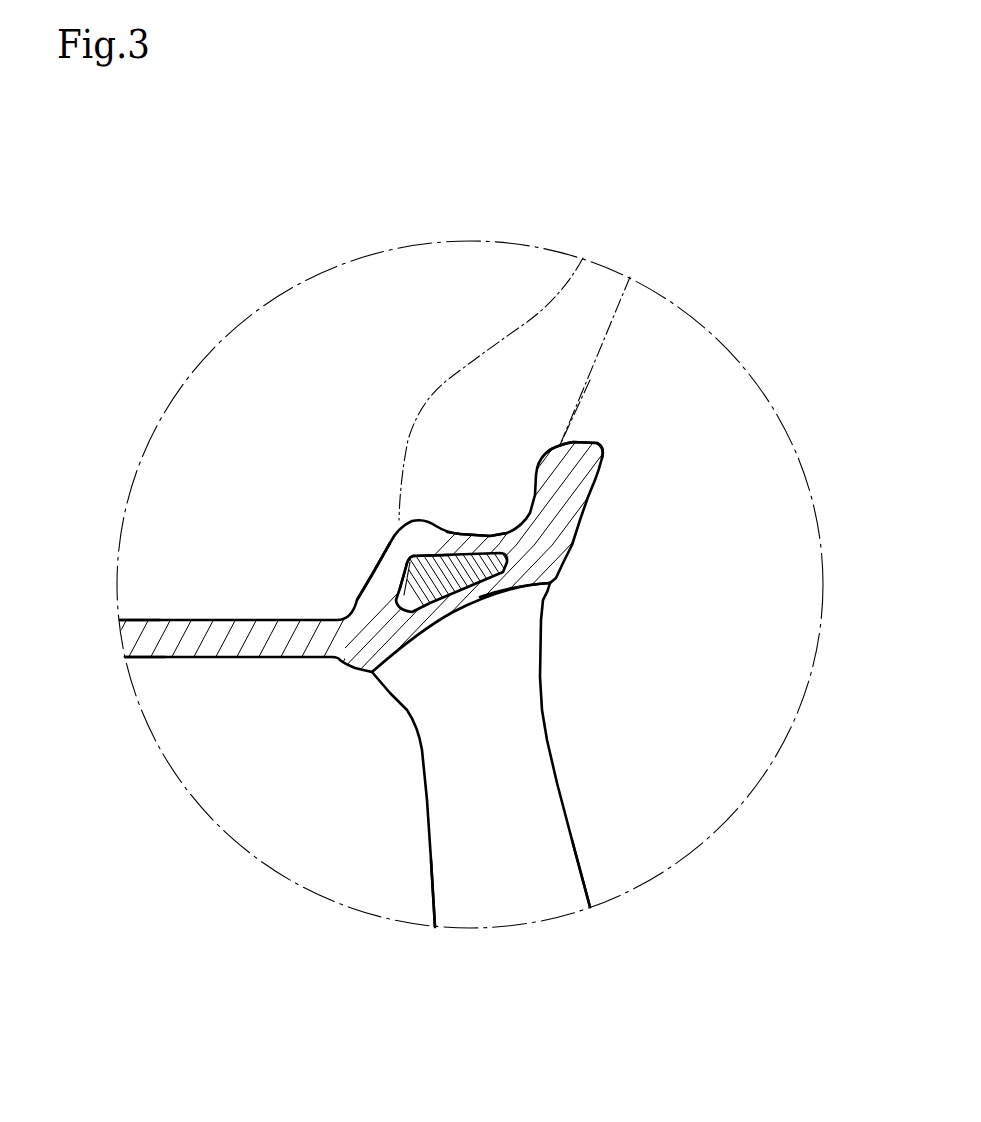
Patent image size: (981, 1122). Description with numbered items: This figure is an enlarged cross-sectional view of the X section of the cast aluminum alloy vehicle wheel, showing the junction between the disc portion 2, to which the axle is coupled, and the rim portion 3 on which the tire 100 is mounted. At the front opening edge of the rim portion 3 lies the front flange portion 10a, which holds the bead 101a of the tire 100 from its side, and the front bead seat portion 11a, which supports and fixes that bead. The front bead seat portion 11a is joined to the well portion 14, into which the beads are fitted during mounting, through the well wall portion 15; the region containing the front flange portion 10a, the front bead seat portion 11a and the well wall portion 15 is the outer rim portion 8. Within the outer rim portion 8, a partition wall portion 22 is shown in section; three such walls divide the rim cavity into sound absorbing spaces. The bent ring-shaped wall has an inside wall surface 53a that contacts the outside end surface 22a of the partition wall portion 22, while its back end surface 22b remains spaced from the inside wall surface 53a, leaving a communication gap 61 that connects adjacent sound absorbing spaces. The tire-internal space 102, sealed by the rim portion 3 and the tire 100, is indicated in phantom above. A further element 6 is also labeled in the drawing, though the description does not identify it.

The disc portion 2 is at (503, 863).
The rim portion 3 is at (163, 633).
The frame member 6 is at (485, 802).
The outer rim portion 8 is at (493, 538).
The front flange portion 10a is at (592, 456).
The front bead seat portion 11a is at (472, 533).
The well portion 14 is at (243, 642).
The well wall portion 15 is at (378, 589).
The partition wall portion 22 is at (418, 613).
The outside end surface 22a is at (437, 527).
The back end surface 22b is at (398, 585).
The inside wall surface 53a is at (520, 588).
The communication gap 61 is at (408, 585).
The tire 100 is at (585, 312).
The bead 101a is at (497, 458).
The tire-internal space 102 is at (460, 278).
The X section X is at (702, 322).